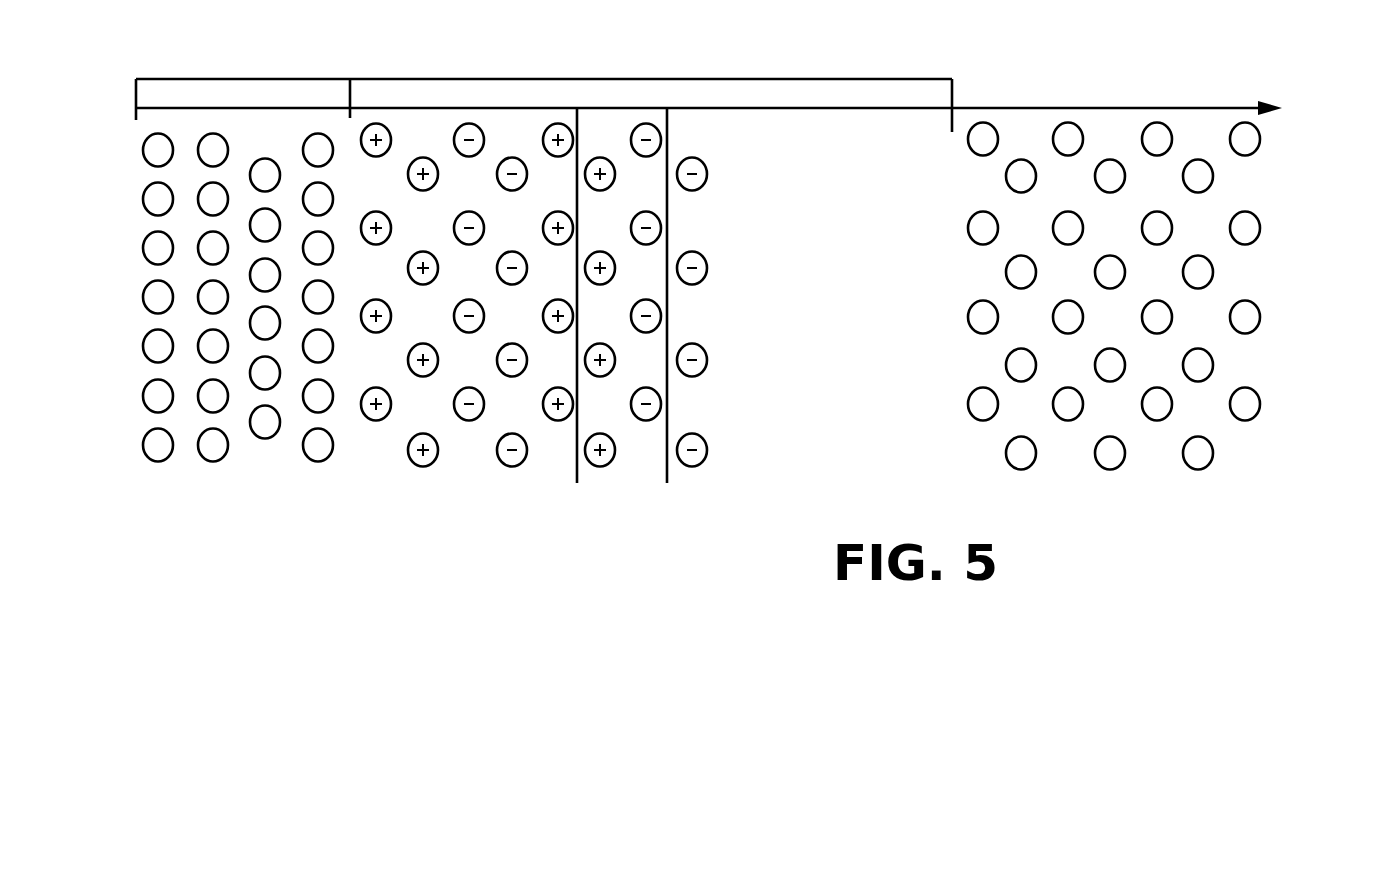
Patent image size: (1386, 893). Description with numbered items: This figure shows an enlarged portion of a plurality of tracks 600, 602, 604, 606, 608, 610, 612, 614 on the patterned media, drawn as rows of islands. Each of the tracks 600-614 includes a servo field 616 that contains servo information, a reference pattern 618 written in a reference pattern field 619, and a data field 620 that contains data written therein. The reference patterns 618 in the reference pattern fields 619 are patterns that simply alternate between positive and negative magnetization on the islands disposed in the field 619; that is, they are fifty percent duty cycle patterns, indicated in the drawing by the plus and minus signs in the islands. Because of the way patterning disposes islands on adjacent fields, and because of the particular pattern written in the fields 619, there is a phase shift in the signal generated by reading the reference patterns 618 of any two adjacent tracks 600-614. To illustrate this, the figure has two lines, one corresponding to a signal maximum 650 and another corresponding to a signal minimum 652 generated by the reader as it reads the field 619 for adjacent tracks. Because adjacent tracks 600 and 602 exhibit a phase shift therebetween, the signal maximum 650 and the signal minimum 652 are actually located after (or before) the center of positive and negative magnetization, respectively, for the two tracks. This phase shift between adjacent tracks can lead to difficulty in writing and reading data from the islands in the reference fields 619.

The track 600 is at (1262, 138).
The track 602 is at (1216, 176).
The track 604 is at (1268, 228).
The track 606 is at (1226, 273).
The track 608 is at (1262, 313).
The track 610 is at (1216, 363).
The track 612 is at (1265, 400).
The track 614 is at (1216, 453).
The servo field 616 is at (250, 75).
The reference pattern 618 is at (558, 124).
The reference pattern field 619 is at (685, 66).
The data field 620 is at (1014, 78).
The signal maximum 650 is at (575, 495).
The signal minimum 652 is at (665, 495).